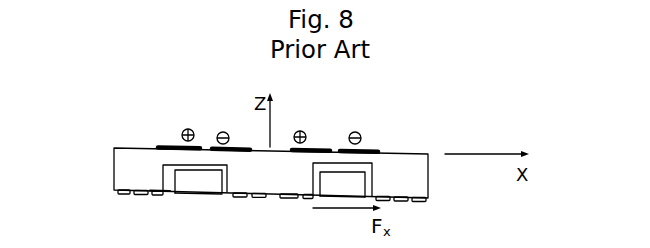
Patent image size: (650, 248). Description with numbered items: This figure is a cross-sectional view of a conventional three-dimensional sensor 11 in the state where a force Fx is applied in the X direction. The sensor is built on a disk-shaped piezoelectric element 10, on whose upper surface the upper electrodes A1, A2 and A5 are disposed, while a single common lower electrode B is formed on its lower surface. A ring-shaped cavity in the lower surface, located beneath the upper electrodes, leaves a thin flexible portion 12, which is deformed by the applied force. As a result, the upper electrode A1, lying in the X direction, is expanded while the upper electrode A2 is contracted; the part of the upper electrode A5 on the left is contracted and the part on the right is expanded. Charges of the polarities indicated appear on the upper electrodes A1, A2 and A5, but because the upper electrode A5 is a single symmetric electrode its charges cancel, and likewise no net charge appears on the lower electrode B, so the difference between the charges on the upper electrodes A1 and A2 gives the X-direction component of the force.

The piezoelectric element 10 is at (422, 175).
The sensor 11 is at (258, 180).
The flexible portion 12 is at (190, 158).
The upper electrode A1 is at (180, 143).
The upper electrode A2 is at (367, 146).
The upper electrode A5 is at (234, 148).
The lower electrode B is at (163, 194).